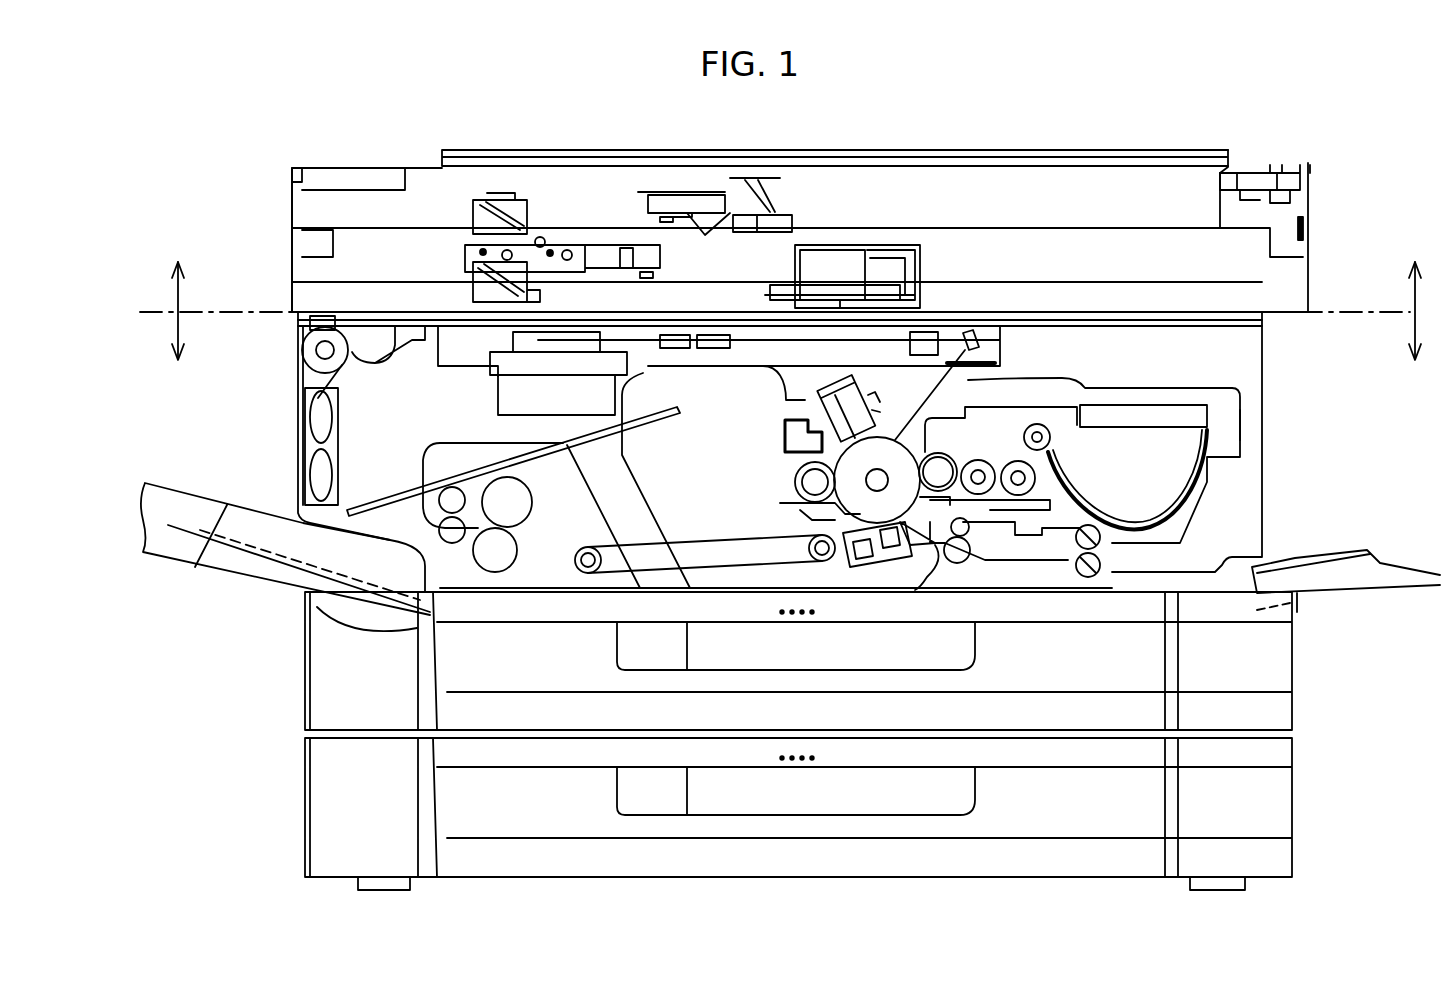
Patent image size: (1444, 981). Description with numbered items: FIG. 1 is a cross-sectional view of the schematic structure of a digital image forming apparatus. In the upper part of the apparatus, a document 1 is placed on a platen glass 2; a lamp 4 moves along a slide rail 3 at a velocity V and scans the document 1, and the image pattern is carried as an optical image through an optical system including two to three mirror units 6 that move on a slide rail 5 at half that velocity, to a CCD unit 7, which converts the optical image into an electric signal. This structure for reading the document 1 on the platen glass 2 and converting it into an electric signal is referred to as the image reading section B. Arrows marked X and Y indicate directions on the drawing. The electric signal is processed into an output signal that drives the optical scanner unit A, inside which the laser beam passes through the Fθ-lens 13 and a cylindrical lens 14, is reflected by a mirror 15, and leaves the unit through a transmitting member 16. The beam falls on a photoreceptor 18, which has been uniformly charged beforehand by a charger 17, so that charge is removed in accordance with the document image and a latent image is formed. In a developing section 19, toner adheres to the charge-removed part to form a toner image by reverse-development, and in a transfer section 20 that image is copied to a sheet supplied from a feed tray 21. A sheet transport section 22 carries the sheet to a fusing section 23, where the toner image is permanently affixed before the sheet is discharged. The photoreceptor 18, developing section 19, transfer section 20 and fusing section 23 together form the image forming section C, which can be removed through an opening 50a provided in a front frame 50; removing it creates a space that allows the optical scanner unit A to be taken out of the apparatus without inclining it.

The document 1 is at (798, 151).
The platen glass 2 is at (1110, 151).
The slide rail 3 is at (1180, 228).
The lamp 4 is at (757, 180).
The slide rail 5 is at (380, 282).
The mirror units 6 is at (488, 210).
The CCD unit 7 is at (863, 248).
The Fθ-lens 13 is at (703, 313).
The cylindrical lens 14 is at (930, 330).
The mirror 15 is at (985, 330).
The transmitting member 16 is at (972, 380).
The charger 17 is at (810, 407).
The photoreceptor 18 is at (885, 437).
The developing section 19 is at (960, 452).
The transfer section 20 is at (896, 567).
The feed tray 21 is at (957, 675).
The sheet transport section 22 is at (722, 570).
The fusing section 23 is at (525, 550).
The front frame 50 is at (1265, 402).
The opening 50a is at (1148, 527).
The optical scanner unit A is at (442, 366).
The image reading section B is at (899, 213).
The image forming section C is at (1218, 428).
The X direction X is at (796, 372).
The Y direction Y is at (794, 289).